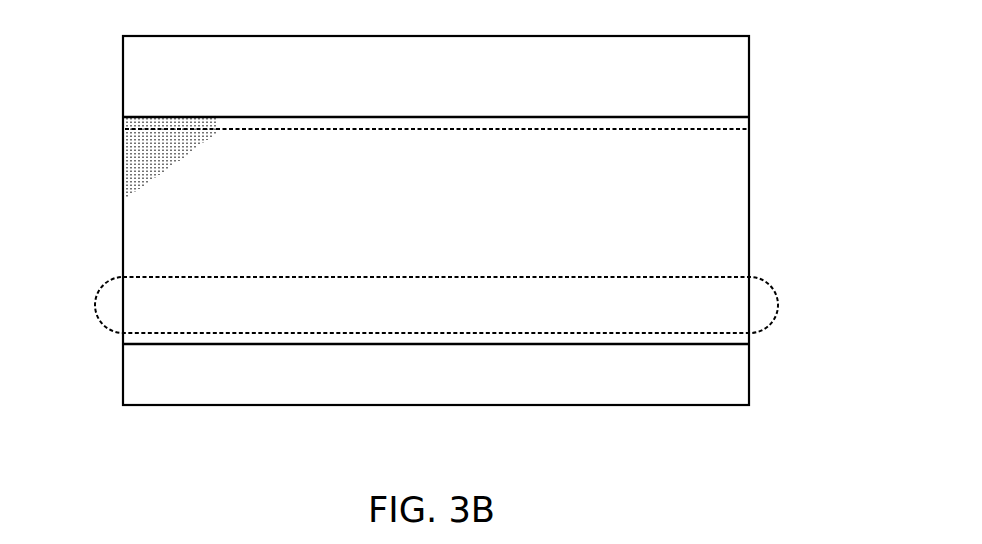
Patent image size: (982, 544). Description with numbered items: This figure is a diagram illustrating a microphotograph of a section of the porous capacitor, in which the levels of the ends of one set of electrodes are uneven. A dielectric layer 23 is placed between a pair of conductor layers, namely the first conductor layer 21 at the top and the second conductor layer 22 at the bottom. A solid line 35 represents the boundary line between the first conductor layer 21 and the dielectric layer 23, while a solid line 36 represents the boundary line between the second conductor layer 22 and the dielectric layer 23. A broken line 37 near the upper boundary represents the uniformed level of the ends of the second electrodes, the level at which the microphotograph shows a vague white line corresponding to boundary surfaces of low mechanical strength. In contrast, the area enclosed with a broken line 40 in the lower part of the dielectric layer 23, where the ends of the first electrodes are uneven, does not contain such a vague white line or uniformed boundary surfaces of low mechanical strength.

The first conductor layer 21 is at (733, 67).
The second conductor layer 22 is at (735, 377).
The dielectric layer 23 is at (733, 205).
The solid line 35 is at (152, 117).
The solid line 36 is at (153, 345).
The broken line 37 is at (218, 132).
The broken line 40 is at (778, 310).